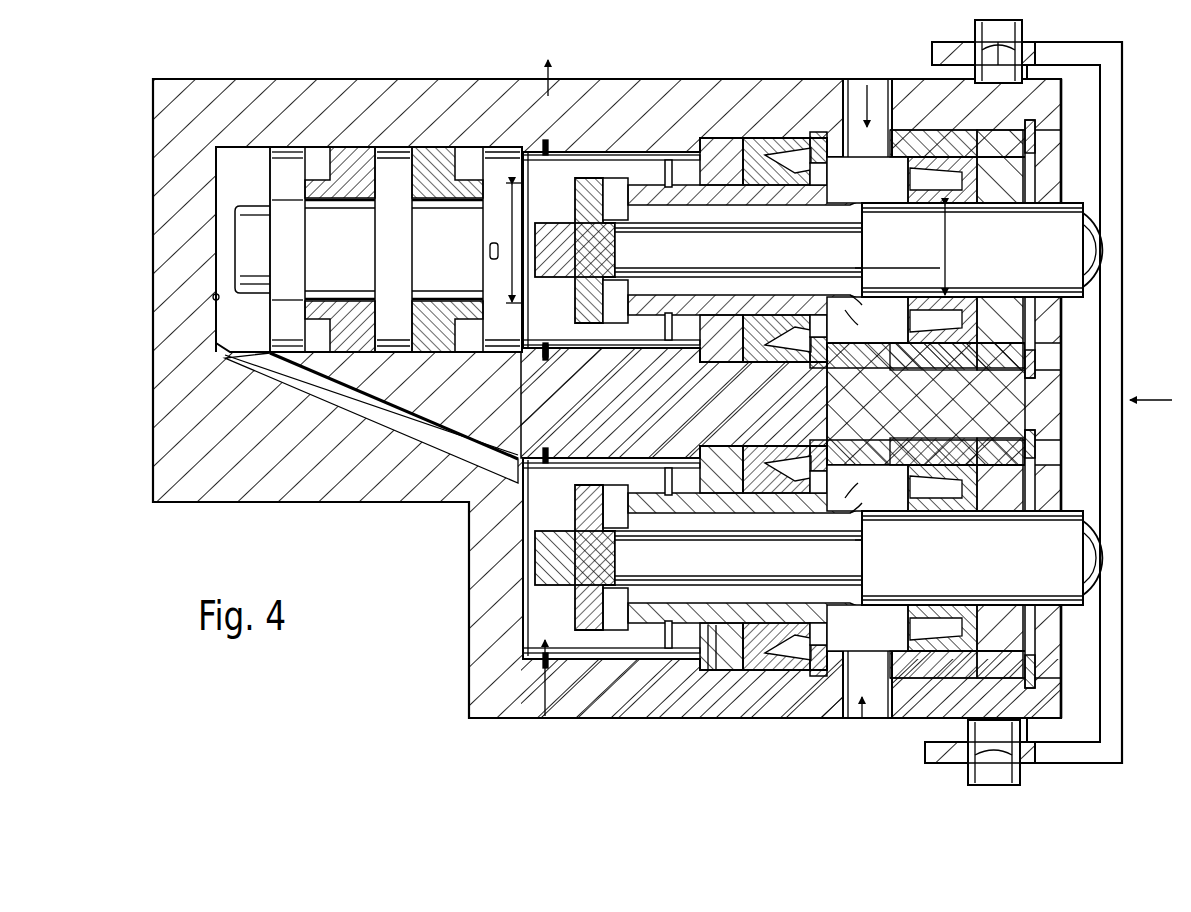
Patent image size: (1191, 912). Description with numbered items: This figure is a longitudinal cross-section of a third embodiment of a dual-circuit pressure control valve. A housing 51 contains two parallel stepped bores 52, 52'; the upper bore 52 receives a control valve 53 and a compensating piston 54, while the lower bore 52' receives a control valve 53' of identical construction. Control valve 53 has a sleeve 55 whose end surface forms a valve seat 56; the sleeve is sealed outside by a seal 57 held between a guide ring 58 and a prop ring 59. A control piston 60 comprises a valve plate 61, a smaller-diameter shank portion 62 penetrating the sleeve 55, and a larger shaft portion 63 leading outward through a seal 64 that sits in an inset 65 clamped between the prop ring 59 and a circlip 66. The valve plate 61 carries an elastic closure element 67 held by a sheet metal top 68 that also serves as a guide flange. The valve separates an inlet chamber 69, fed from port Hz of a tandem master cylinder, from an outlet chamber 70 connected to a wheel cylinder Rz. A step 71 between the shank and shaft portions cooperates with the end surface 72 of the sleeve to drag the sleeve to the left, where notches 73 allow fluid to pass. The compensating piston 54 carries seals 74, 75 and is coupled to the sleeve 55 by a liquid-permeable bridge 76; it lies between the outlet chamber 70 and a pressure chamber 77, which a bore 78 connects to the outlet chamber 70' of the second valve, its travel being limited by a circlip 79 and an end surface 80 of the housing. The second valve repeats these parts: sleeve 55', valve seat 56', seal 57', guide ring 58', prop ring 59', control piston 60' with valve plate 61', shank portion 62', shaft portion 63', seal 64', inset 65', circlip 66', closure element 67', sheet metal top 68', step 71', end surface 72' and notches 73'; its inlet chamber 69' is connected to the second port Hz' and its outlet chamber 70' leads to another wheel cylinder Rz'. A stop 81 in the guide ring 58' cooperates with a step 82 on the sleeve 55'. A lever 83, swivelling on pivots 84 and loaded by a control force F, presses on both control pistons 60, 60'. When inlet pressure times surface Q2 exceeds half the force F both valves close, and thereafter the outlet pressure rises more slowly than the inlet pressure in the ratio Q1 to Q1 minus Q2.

The housing 51 is at (162, 432).
The stepped bore 52 is at (577, 159).
The control valve 53 is at (607, 167).
The compensating piston 54 is at (400, 146).
The sleeve 55 is at (745, 178).
The valve seat 56 is at (738, 150).
The seal 57 is at (759, 190).
The guide ring 58 is at (721, 200).
The prop ring 59 is at (818, 193).
The control piston 60 is at (902, 190).
The valve plate 61 is at (534, 191).
The shank portion 62 is at (777, 202).
The shaft portion 63 is at (1015, 180).
The seal 64 is at (926, 237).
The inset 65 is at (1007, 70).
The circlip 66 is at (1076, 194).
The elastic closure element 67 is at (598, 180).
The sheet metal top 68 is at (506, 192).
The inlet chamber 69 is at (864, 91).
The outlet chamber 70 is at (596, 178).
The step 71 is at (897, 263).
The end surface 72 is at (868, 328).
The notches 73 is at (875, 310).
The seal 74 is at (340, 146).
The seal 75 is at (440, 146).
The bridge 76 is at (667, 160).
The pressure chamber 77 is at (230, 171).
The bore 78 is at (355, 408).
The circlip 79 is at (545, 362).
The end surface 80 is at (213, 297).
The stop 81 is at (708, 672).
The step 82 is at (716, 672).
The lever 83 is at (1120, 152).
The pivots 84 is at (1000, 52).
The outlet chamber 70' is at (555, 558).
The sheet metal top 68' is at (486, 672).
The elastic closure element 67' is at (541, 630).
The valve plate 61' is at (520, 606).
The control valve 53' is at (591, 629).
The stepped bore 52' is at (580, 642).
The valve seat 56' is at (738, 656).
The sleeve 55' is at (745, 611).
The guide ring 58' is at (728, 614).
The seal 57' is at (763, 600).
The shank portion 62' is at (777, 615).
The prop ring 59' is at (818, 597).
The inlet chamber 69' is at (859, 714).
The control piston 60' is at (902, 558).
The seal 64' is at (956, 596).
The circlip 66' is at (1096, 588).
The shaft portion 63' is at (1017, 572).
The inset 65' is at (1002, 755).
The end surface 72' is at (870, 480).
The notches 73' is at (885, 523).
The step 71' is at (881, 543).
The surface Q1 is at (500, 243).
The surface Q2 is at (944, 250).
The wheel cylinder Rz is at (553, 65).
The wheel cylinder Rz' is at (545, 696).
The port of tandem master cylinder Hz is at (870, 87).
The second port of tandem master cylinder Hz' is at (864, 725).
The control force F is at (1151, 383).